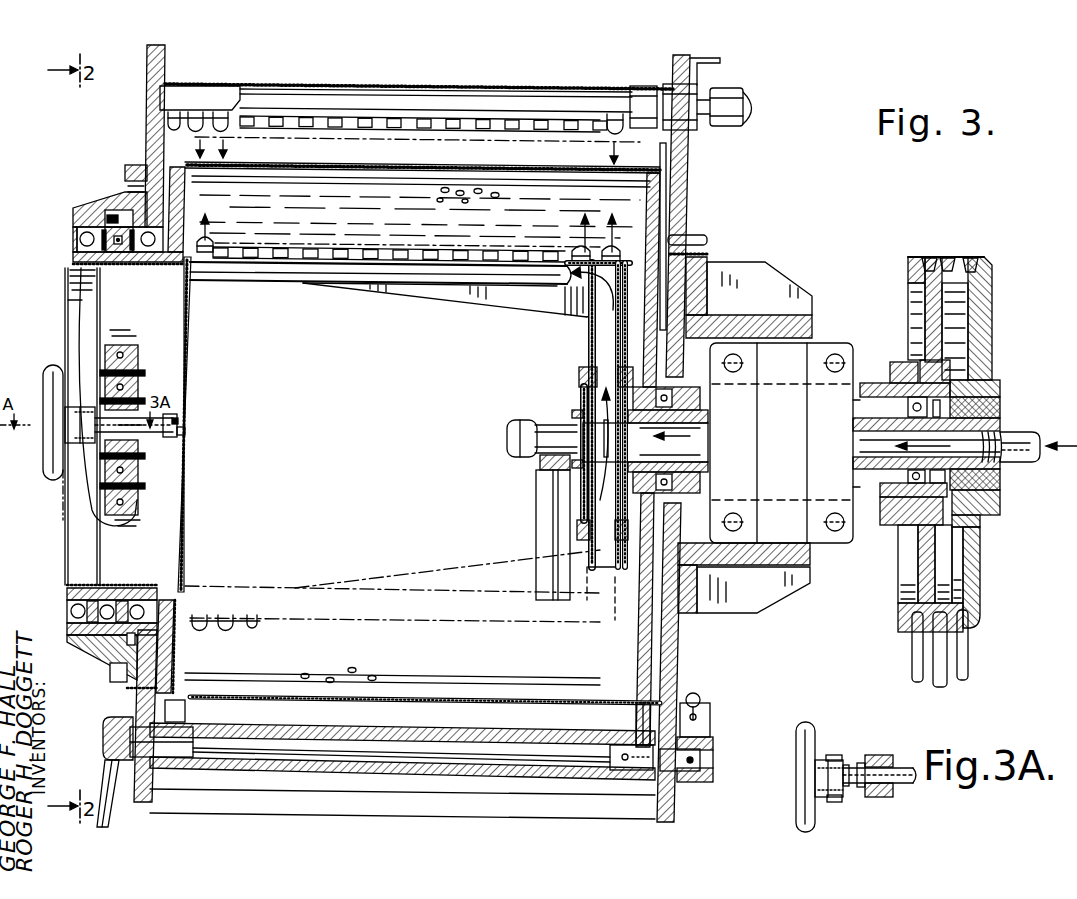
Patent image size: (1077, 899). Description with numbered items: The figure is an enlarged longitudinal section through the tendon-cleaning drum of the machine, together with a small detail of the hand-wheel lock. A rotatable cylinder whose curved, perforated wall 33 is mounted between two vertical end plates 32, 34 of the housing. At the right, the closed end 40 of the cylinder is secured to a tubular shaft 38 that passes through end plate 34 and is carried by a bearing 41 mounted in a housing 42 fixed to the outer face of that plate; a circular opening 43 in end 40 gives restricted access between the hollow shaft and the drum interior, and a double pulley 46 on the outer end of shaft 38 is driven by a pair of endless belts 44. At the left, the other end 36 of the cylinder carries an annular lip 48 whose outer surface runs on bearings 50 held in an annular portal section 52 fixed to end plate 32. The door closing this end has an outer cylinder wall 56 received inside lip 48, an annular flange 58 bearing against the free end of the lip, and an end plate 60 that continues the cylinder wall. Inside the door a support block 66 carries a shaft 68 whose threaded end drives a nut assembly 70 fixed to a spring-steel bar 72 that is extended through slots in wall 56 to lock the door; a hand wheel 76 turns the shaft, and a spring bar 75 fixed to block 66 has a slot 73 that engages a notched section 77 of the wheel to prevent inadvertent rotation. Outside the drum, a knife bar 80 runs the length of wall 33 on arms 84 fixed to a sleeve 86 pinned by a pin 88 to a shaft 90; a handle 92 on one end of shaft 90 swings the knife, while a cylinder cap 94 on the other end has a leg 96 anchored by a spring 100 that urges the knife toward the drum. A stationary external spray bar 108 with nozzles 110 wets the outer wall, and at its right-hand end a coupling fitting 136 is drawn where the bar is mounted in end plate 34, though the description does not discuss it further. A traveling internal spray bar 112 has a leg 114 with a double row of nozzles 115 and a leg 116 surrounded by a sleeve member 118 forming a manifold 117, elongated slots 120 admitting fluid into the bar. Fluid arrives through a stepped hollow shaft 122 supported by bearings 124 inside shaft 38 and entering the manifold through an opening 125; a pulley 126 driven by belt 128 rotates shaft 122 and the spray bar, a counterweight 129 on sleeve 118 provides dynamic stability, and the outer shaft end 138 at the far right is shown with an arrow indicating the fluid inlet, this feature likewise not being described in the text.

In FIG. 3, the end plate 32 is at (166, 66).
In FIG. 3, the wall 33 is at (400, 163).
In FIG. 3, the end plate 34 is at (673, 70).
In FIG. 3, the end of cylinder 36 is at (186, 197).
In FIG. 3, the tubular shaft 38 is at (866, 362).
In FIG. 3, the closed end 40 is at (648, 190).
In FIG. 3, the bearing 41 is at (832, 342).
In FIG. 3, the housing 42 is at (775, 270).
In FIG. 3, the circular opening 43 is at (656, 470).
In FIG. 3, the endless belts 44 is at (947, 257).
In FIG. 3, the double sheave or pulley 46 is at (907, 268).
In FIG. 3, the annular lip 48 is at (130, 270).
In FIG. 3, the bearings 50 is at (80, 239).
In FIG. 3, the annular portal section 52 is at (100, 205).
In FIG. 3, the outer cylinder wall 56 is at (80, 275).
In FIG. 3, the annular outer flange 58 is at (66, 266).
In FIG. 3, the end plate of door 60 is at (190, 362).
In FIG. 3, the support block 66 is at (132, 345).
In FIG. 3, the shaft 68 is at (160, 438).
In FIG. 3A, the shaft 68 is at (882, 758).
In FIG. 3, the nut assembly 70 is at (190, 445).
In FIG. 3, the bar 72 is at (191, 304).
In FIG. 3, the elongated slot 73 is at (75, 400).
In FIG. 3A, the elongated slot 73 is at (835, 758).
In FIG. 3, the spring bar 75 is at (68, 300).
In FIG. 3A, the spring bar 75 is at (836, 802).
In FIG. 3A, the hand wheel 76 is at (811, 724).
In FIG. 3A, the notched section 77 is at (850, 762).
In FIG. 3, the knife bar 80 is at (238, 690).
In FIG. 3, the arm 84 is at (186, 692).
In FIG. 3, the sleeve 86 is at (300, 768).
In FIG. 3, the pin 88 is at (618, 757).
In FIG. 3, the shaft 90 is at (470, 770).
In FIG. 3, the handle 92 is at (114, 806).
In FIG. 3, the cylinder cap 94 is at (700, 782).
In FIG. 3, the leg 96 is at (706, 715).
In FIG. 3, the spring 100 is at (700, 694).
In FIG. 3, the external spray bar 108 is at (405, 90).
In FIG. 3, the nozzles 110 is at (353, 124).
In FIG. 3, the traveling internal spray bar 112 is at (488, 310).
In FIG. 3, the leg 114 is at (272, 282).
In FIG. 3, the nozzles 115 is at (215, 238).
In FIG. 3, the leg 116 is at (589, 331).
In FIG. 3, the manifold 117 is at (580, 385).
In FIG. 3, the sleeve member 118 is at (588, 385).
In FIG. 3, the elongated slots 120 is at (580, 434).
In FIG. 3, the stepped hollow shaft 122 is at (998, 404).
In FIG. 3, the bearings 124 is at (700, 400).
In FIG. 3, the opening 125 is at (640, 444).
In FIG. 3, the pulley or sheave 126 is at (992, 300).
In FIG. 3, the endless belt 128 is at (972, 257).
In FIG. 3, the counterweight 129 is at (538, 496).
In FIG. 3, the nut assembly 136 is at (752, 97).
In FIG. 3, the shaft end 138 is at (1031, 431).